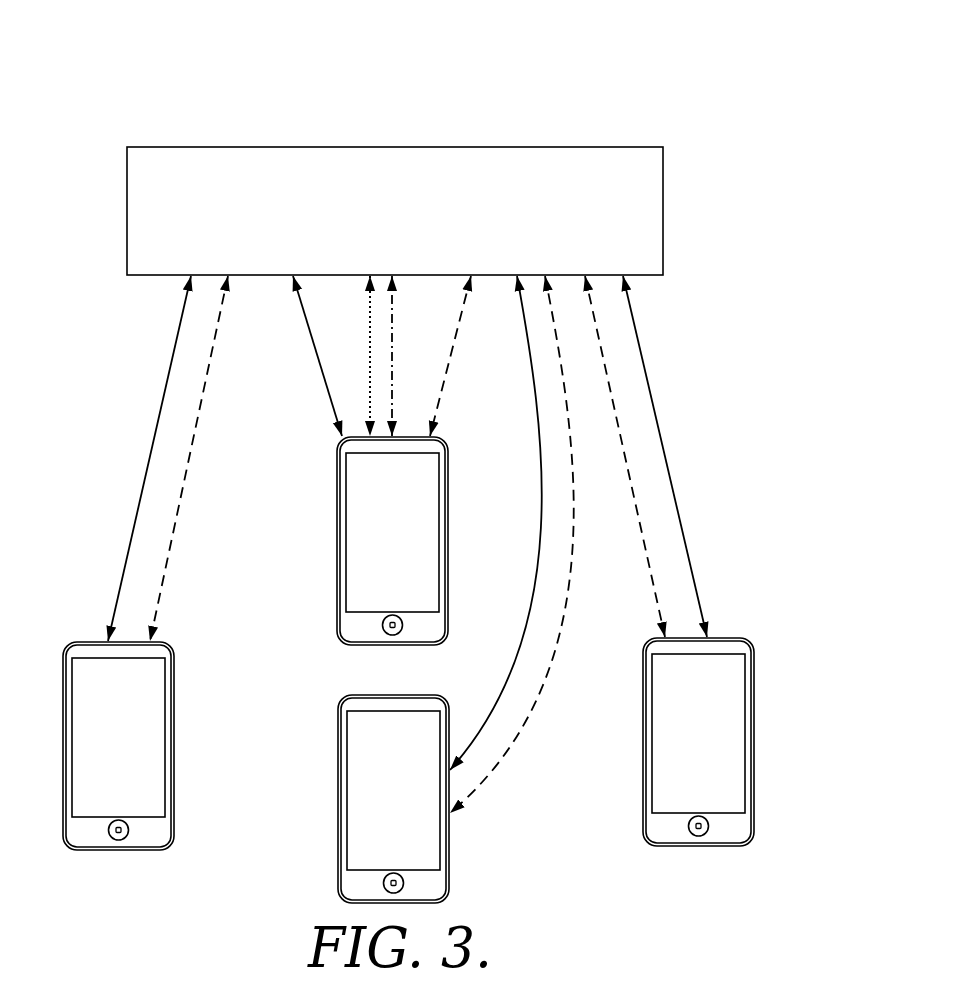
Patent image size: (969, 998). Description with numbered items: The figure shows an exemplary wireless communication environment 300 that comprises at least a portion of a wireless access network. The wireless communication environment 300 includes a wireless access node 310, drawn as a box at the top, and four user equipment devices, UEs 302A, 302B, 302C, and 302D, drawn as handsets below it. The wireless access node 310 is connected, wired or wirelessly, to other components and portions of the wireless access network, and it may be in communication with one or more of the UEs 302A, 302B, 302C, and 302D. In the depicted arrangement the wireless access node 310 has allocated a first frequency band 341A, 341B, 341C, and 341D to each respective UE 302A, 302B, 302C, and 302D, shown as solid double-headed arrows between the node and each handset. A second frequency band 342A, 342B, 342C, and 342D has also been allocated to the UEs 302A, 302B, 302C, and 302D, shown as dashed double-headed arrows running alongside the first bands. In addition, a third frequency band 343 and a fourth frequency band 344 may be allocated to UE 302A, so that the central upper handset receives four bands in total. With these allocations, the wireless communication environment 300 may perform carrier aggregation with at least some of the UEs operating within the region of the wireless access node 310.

The wireless communication environment 300 is at (572, 86).
The wireless access node 310 is at (417, 236).
The UE 302A is at (421, 550).
The UE 302B is at (147, 764).
The UE 302C is at (422, 830).
The UE 302D is at (727, 736).
The first frequency band 341A is at (324, 380).
The first frequency band 341B is at (138, 503).
The first frequency band 341C is at (507, 686).
The first frequency band 341D is at (679, 507).
The second frequency band 342A is at (439, 410).
The second frequency band 342B is at (177, 511).
The second frequency band 342C is at (537, 721).
The second frequency band 342D is at (651, 562).
The third frequency band 343 is at (371, 332).
The fourth frequency band 344 is at (394, 332).